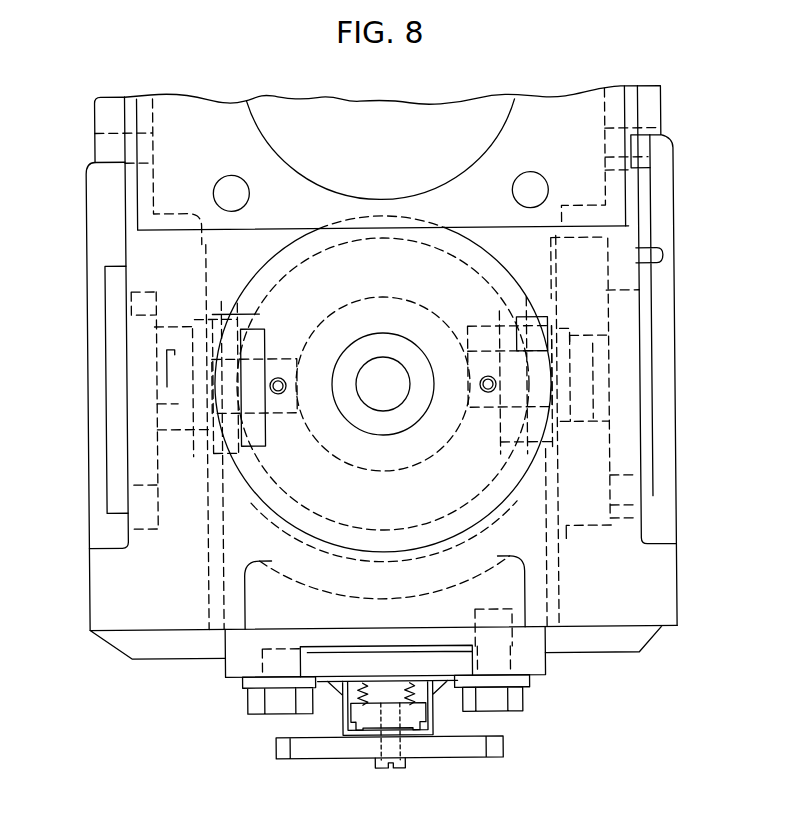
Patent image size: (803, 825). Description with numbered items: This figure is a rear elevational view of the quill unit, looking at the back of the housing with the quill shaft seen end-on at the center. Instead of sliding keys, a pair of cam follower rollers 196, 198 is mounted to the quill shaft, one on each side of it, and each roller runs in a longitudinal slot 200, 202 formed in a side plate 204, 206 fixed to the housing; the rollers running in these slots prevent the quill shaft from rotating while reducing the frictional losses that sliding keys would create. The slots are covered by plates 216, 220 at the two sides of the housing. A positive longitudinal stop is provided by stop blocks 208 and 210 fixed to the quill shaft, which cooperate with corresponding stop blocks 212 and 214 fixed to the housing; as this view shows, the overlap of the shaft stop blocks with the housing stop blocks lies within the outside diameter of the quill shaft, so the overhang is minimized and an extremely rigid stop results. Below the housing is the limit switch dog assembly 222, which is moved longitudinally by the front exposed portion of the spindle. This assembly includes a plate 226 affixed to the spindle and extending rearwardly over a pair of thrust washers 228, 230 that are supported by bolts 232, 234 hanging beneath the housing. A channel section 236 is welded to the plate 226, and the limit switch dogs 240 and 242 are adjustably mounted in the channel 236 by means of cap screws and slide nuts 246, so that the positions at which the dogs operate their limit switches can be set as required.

The cam follower roller 196 is at (173, 345).
The cam follower roller 198 is at (577, 345).
The longitudinal slot 200 is at (205, 375).
The longitudinal slot 202 is at (560, 422).
The side plate 204 is at (153, 299).
The side plate 206 is at (597, 313).
The stop block 208 is at (267, 443).
The stop block 210 is at (472, 469).
The stop block 212 is at (153, 325).
The stop block 214 is at (560, 440).
The cover plate 216 is at (105, 279).
The cover plate 220 is at (648, 498).
The limit switch dog assembly 222 is at (477, 765).
The plate 226 is at (250, 664).
The thrust washer 228 is at (240, 688).
The thrust washer 230 is at (532, 684).
The bolt 232 is at (245, 708).
The bolt 234 is at (495, 706).
The channel section 236 is at (432, 716).
The limit switch dog 240 is at (460, 759).
The limit switch dog 242 is at (322, 759).
The slide nut 246 is at (348, 708).